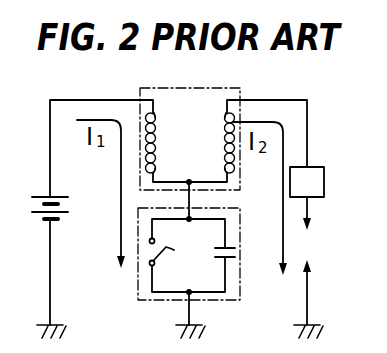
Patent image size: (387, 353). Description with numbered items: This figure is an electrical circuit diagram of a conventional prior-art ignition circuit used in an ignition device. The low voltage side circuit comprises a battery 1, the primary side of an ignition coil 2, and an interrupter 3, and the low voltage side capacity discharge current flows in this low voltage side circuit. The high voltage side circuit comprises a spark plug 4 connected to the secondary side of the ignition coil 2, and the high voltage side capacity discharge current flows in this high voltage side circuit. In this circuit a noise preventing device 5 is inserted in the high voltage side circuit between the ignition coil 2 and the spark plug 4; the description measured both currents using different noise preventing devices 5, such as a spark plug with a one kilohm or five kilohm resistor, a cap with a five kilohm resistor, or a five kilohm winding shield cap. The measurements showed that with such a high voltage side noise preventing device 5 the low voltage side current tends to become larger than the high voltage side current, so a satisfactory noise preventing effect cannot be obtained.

The battery 1 is at (33, 202).
The ignition coil 2 is at (223, 88).
The interrupter 3 is at (231, 300).
The spark plug 4 is at (304, 248).
The noise preventing device 5 is at (315, 167).